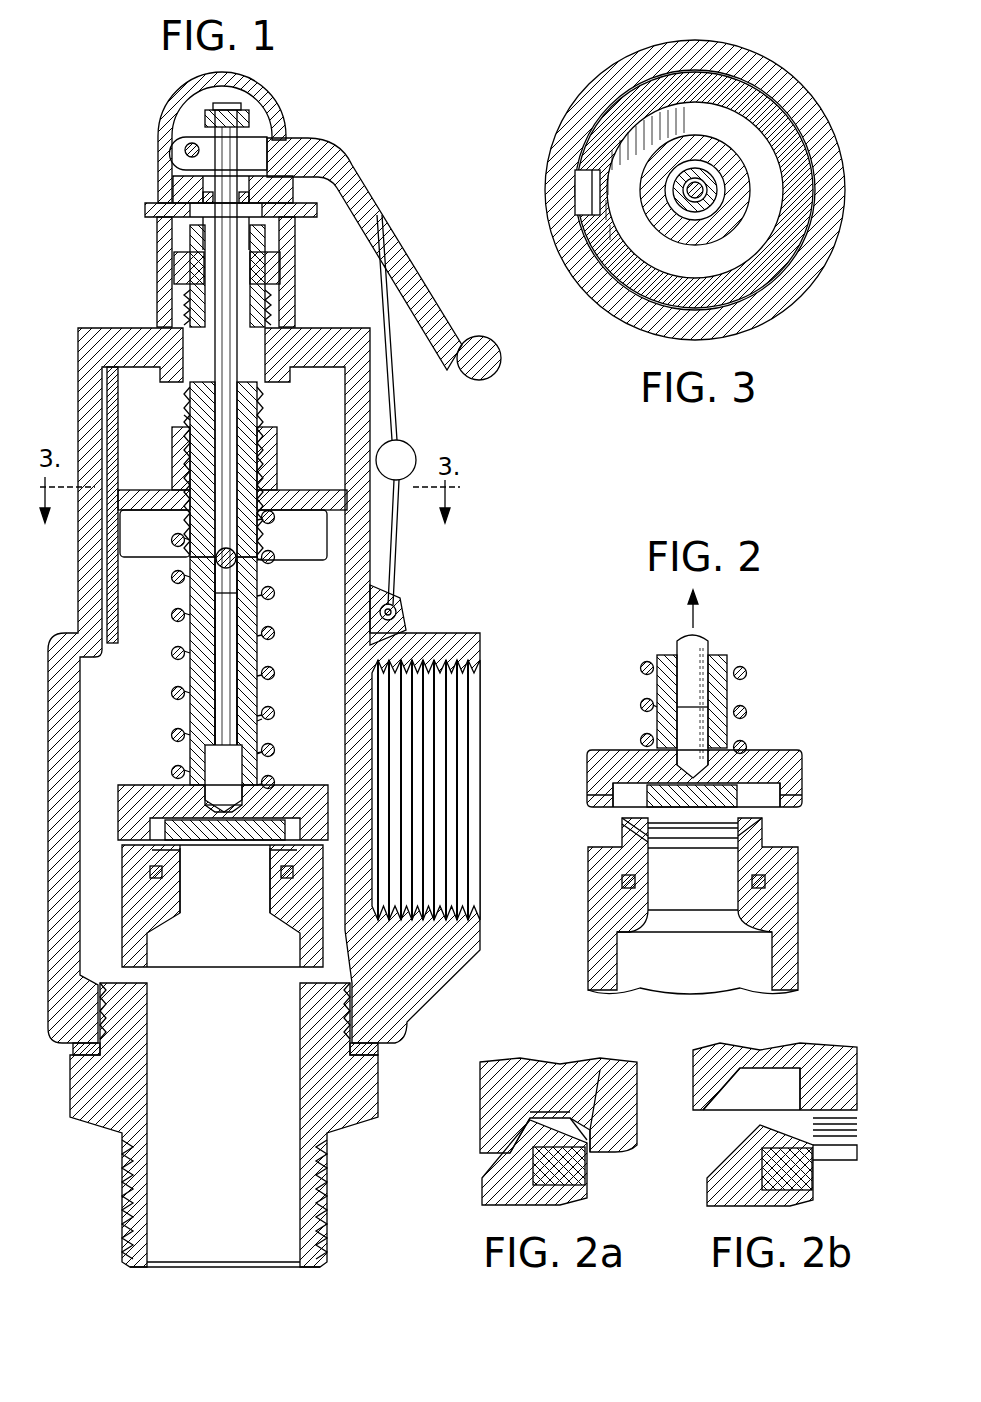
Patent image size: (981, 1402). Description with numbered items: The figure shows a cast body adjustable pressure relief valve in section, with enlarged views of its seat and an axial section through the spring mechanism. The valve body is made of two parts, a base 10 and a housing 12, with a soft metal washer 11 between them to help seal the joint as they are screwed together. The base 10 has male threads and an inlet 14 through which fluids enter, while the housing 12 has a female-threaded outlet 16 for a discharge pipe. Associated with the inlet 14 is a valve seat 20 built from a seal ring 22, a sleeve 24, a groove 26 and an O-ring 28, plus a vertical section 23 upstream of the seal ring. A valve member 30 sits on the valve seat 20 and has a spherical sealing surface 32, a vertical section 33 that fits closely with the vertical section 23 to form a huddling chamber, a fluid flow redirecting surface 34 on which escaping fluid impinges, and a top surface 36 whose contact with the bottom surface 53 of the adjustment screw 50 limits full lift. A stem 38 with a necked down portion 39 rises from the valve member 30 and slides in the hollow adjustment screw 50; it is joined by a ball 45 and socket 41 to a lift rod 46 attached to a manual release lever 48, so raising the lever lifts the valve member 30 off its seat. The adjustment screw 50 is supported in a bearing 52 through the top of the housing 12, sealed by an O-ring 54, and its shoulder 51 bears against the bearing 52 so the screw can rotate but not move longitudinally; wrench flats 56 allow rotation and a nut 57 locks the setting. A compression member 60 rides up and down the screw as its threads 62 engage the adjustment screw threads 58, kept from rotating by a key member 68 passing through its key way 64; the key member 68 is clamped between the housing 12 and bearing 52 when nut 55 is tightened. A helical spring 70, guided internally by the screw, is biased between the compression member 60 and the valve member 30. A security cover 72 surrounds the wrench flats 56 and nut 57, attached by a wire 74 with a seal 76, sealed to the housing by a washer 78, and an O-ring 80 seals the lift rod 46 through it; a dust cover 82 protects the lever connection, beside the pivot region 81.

In FIG. 1, the base 10 is at (380, 1094).
In FIG. 1, the soft metal washer 11 is at (380, 1052).
In FIG. 1, the housing 12 is at (62, 636).
In FIG. 3, the housing 12 is at (785, 298).
In FIG. 1, the inlet 14 is at (293, 1262).
In FIG. 1, the outlet 16 is at (478, 752).
In FIG. 1, the valve seat 20 is at (256, 864).
In FIG. 2, the valve seat 20 is at (720, 905).
In FIG. 1, the seal ring 22 is at (183, 850).
In FIG. 2, the seal ring 22 is at (660, 830).
In FIG. 2a, the seal ring 22 is at (590, 1172).
In FIG. 2b, the seal ring 22 is at (762, 1170).
In FIG. 2, the vertical section 23 is at (758, 812).
In FIG. 2a, the vertical section 23 is at (530, 1118).
In FIG. 2b, the vertical section 23 is at (815, 1142).
In FIG. 1, the sleeve 24 is at (178, 935).
In FIG. 2, the sleeve 24 is at (628, 895).
In FIG. 2a, the sleeve 24 is at (571, 1196).
In FIG. 2b, the sleeve 24 is at (800, 1200).
In FIG. 1, the groove 26 is at (295, 872).
In FIG. 2, the groove 26 is at (765, 880).
In FIG. 1, the O-ring 28 is at (150, 872).
In FIG. 2, the O-ring 28 is at (622, 880).
In FIG. 1, the valve member 30 is at (292, 776).
In FIG. 2, the valve member 30 is at (790, 735).
In FIG. 2, the sealing surface 32 is at (760, 790).
In FIG. 2a, the sealing surface 32 is at (592, 1135).
In FIG. 2b, the sealing surface 32 is at (780, 1066).
In FIG. 2, the vertical section 33 is at (640, 790).
In FIG. 2a, the vertical section 33 is at (596, 1110).
In FIG. 2b, the vertical section 33 is at (805, 1072).
In FIG. 2, the fluid flow redirecting surface 34 is at (590, 799).
In FIG. 2a, the fluid flow redirecting surface 34 is at (492, 1138).
In FIG. 2b, the fluid flow redirecting surface 34 is at (728, 1078).
In FIG. 1, the top surface 36 is at (272, 752).
In FIG. 2, the top surface 36 is at (747, 712).
In FIG. 1, the stem 38 is at (218, 762).
In FIG. 2, the stem 38 is at (700, 700).
In FIG. 1, the necked down portion 39 is at (225, 717).
In FIG. 1, the socket 41 is at (232, 606).
In FIG. 1, the ball 45 is at (238, 561).
In FIG. 1, the lift rod 46 is at (240, 145).
In FIG. 3, the lift rod 46 is at (697, 204).
In FIG. 1, the manual release lever 48 is at (421, 282).
In FIG. 1, the adjustment screw 50 is at (262, 646).
In FIG. 3, the adjustment screw 50 is at (710, 175).
In FIG. 1, the shoulder 51 is at (190, 398).
In FIG. 1, the bearing 52 is at (262, 392).
In FIG. 1, the bottom surface 53 is at (264, 720).
In FIG. 2, the bottom surface 53 is at (660, 705).
In FIG. 1, the O-ring 54 is at (273, 318).
In FIG. 1, the nut 55 is at (268, 291).
In FIG. 1, the wrench flats 56 is at (200, 228).
In FIG. 1, the nut 57 is at (174, 260).
In FIG. 1, the adjustment screw threads 58 is at (264, 426).
In FIG. 1, the compression member 60 is at (297, 512).
In FIG. 3, the compression member 60 is at (740, 80).
In FIG. 1, the threads 62 is at (188, 420).
In FIG. 1, the key way 64 is at (128, 500).
In FIG. 3, the key way 64 is at (617, 196).
In FIG. 1, the key member 68 is at (118, 585).
In FIG. 3, the key member 68 is at (572, 190).
In FIG. 1, the helical spring 70 is at (275, 677).
In FIG. 2, the helical spring 70 is at (640, 666).
In FIG. 1, the security cover 72 is at (157, 287).
In FIG. 1, the wire 74 is at (397, 399).
In FIG. 1, the seal 76 is at (413, 446).
In FIG. 1, the washer 78 is at (185, 320).
In FIG. 1, the O-ring 80 is at (205, 196).
In FIG. 1, the pivot pin 81 is at (185, 151).
In FIG. 1, the dust cover 82 is at (266, 93).